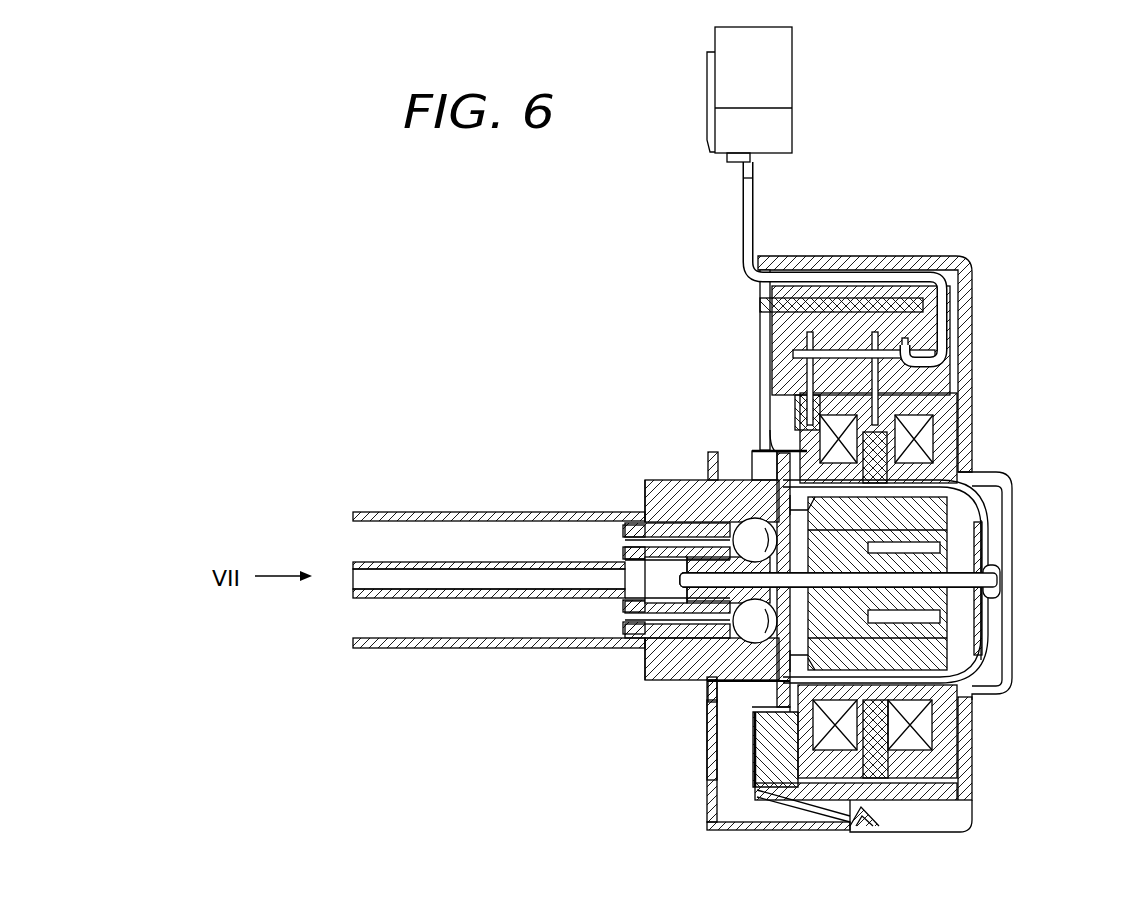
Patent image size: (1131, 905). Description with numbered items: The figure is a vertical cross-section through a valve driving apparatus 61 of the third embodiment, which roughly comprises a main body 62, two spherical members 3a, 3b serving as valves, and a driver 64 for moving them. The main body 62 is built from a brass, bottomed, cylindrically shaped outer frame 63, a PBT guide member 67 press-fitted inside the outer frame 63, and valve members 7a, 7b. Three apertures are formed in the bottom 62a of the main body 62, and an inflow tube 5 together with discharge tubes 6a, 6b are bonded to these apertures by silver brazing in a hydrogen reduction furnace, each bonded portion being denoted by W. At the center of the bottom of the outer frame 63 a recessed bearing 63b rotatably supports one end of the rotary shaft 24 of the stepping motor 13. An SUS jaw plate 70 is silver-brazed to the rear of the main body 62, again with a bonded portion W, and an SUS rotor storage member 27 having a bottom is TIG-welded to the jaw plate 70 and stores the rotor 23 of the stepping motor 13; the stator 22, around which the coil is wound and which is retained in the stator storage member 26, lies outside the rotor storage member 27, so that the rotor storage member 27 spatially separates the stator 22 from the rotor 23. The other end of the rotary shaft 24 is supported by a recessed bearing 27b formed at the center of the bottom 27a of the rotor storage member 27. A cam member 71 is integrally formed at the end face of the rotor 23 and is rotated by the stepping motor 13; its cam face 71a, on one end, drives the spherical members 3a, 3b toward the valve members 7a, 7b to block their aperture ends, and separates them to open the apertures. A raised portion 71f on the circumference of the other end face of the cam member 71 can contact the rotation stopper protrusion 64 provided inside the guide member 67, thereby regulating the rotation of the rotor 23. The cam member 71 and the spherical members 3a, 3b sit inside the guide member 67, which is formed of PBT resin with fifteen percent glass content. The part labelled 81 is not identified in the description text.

The spherical member 3a is at (712, 518).
The spherical member 3b is at (712, 702).
The inflow tube 5 is at (488, 582).
The discharge tube 6a is at (398, 512).
The discharge tube 6b is at (422, 648).
The valve member 7a is at (628, 527).
The valve member 7b is at (633, 647).
The stepping motor 13 is at (1006, 444).
The stator 22 is at (960, 407).
The rotor 23 is at (955, 522).
The rotary shaft 24 is at (982, 606).
The stator storage member 26 is at (966, 752).
The rotor storage member 27 is at (986, 652).
The bottom of the rotor storage member 27a is at (985, 548).
The recessed bearing 27b is at (1001, 580).
The valve driving apparatus 61 is at (904, 170).
The main body 62 is at (650, 462).
The bottom of the main body 62a is at (645, 488).
The outer frame 63 is at (668, 522).
The recessed bearing 63b is at (665, 604).
The rotation stopper protrusion 64 is at (1026, 345).
The guide member 67 is at (737, 520).
The jaw plate 70 is at (745, 826).
The cam member 71 is at (848, 830).
The cam face 71a is at (705, 787).
The raised portion 71f is at (747, 450).
The bracket plate 81 is at (772, 832).
The bonded portion W is at (645, 525).